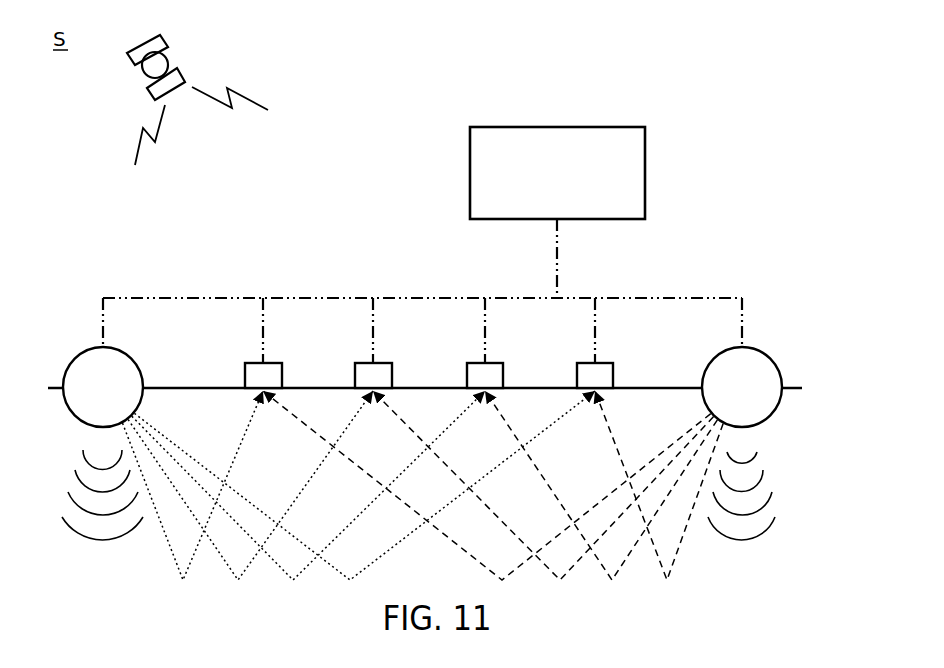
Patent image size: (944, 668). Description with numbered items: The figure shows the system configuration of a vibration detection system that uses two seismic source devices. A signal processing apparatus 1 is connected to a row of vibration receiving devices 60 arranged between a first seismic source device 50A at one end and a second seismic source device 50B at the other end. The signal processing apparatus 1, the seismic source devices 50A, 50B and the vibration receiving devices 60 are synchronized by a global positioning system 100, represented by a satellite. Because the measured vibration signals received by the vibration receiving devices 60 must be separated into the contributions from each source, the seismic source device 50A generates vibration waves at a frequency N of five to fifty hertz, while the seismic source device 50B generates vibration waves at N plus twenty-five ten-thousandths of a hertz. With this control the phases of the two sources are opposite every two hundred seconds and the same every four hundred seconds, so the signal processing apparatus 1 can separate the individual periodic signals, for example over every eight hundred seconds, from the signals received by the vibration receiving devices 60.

The global positioning system 100 is at (172, 53).
The signal processing apparatus 1 is at (612, 127).
The seismic source device 50A is at (92, 358).
The seismic source device 50B is at (753, 360).
The vibration receiving device 60 is at (273, 363).